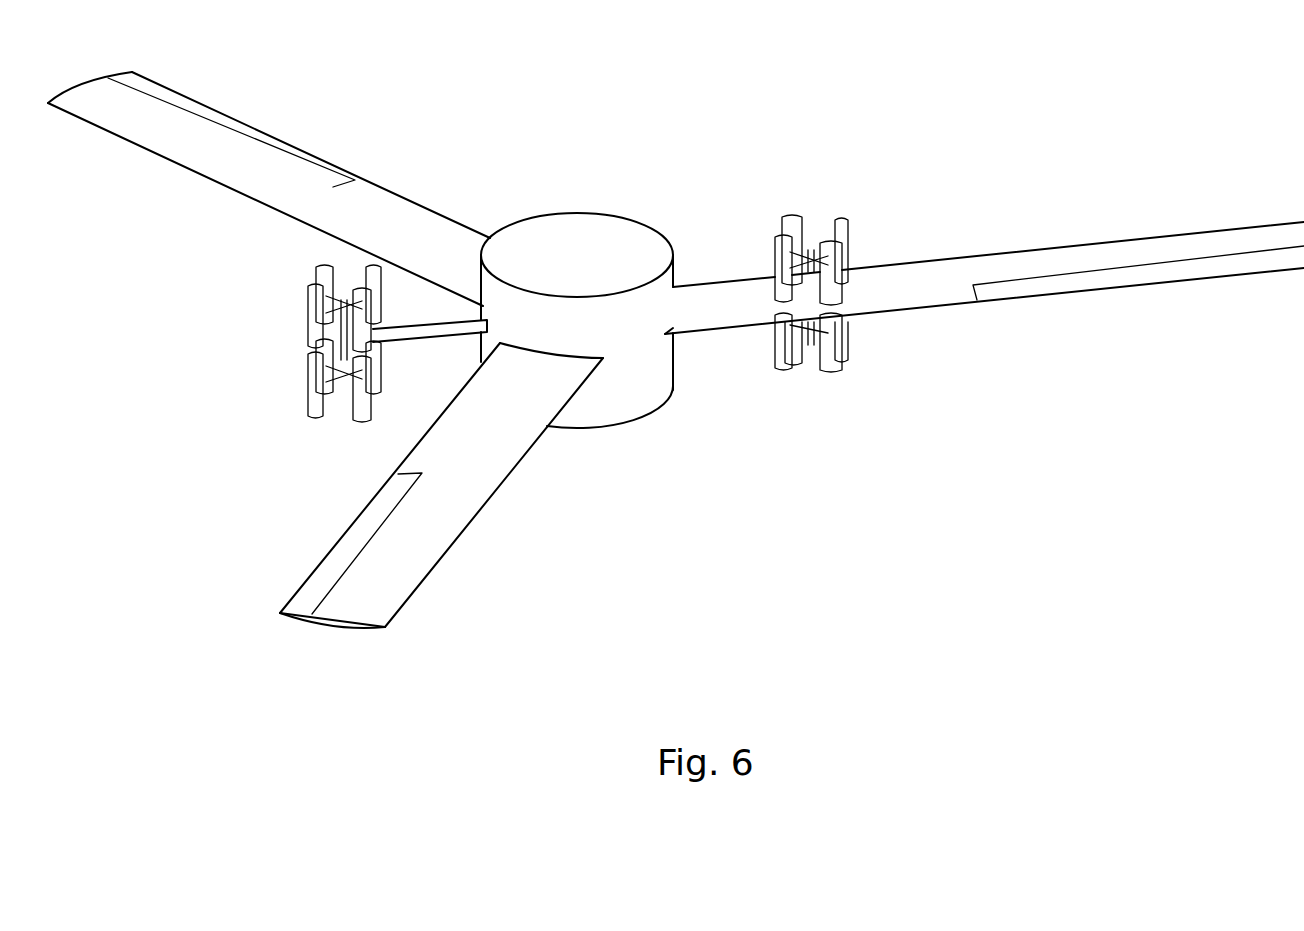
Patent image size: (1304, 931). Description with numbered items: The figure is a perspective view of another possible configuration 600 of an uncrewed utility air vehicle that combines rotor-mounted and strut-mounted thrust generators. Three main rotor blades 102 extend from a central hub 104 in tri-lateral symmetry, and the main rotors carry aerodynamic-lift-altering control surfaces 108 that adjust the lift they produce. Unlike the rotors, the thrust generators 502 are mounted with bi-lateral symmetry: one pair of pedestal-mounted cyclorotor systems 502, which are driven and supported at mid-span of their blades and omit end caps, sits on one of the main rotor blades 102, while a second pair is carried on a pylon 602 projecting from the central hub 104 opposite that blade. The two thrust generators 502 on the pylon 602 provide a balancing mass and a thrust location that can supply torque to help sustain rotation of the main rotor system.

The main rotor blades 102 is at (975, 250).
The central hub 104 is at (647, 418).
The aerodynamic-lift-altering control surfaces 108 is at (238, 138).
The pedestal-mounted cyclorotor system 502 is at (306, 302).
The configuration 600 is at (593, 207).
The pylon 602 is at (433, 343).